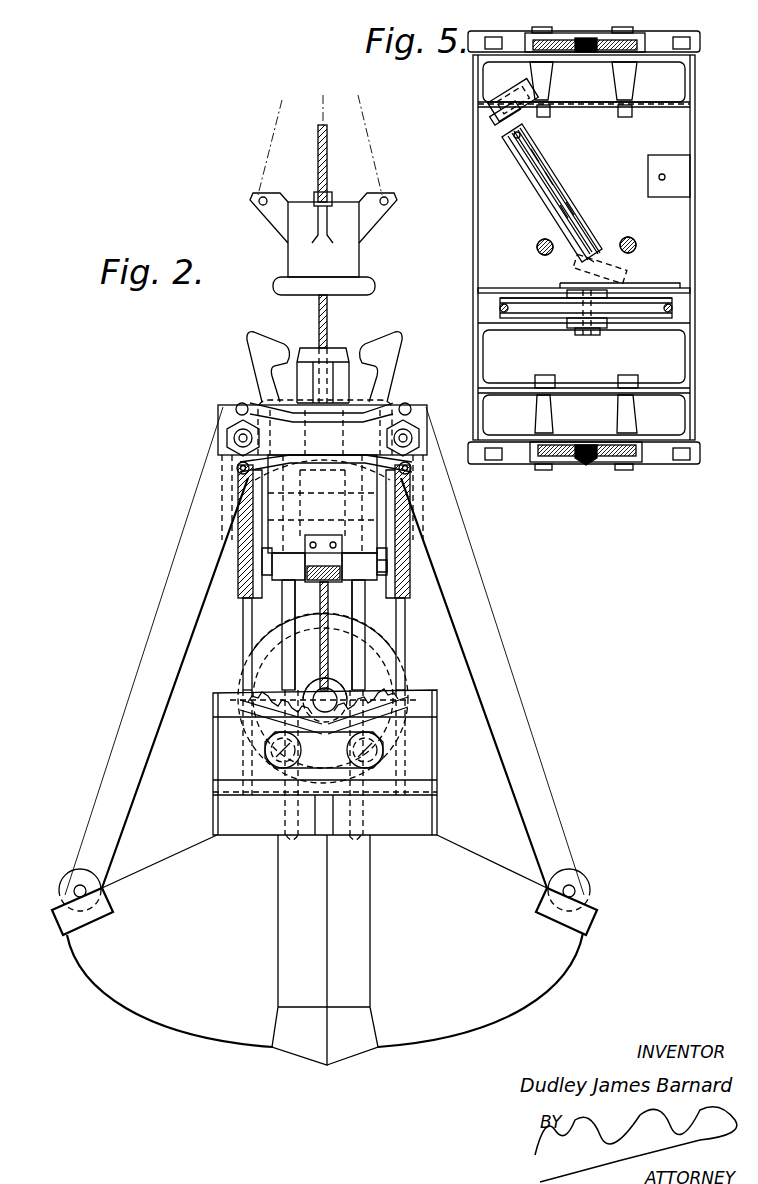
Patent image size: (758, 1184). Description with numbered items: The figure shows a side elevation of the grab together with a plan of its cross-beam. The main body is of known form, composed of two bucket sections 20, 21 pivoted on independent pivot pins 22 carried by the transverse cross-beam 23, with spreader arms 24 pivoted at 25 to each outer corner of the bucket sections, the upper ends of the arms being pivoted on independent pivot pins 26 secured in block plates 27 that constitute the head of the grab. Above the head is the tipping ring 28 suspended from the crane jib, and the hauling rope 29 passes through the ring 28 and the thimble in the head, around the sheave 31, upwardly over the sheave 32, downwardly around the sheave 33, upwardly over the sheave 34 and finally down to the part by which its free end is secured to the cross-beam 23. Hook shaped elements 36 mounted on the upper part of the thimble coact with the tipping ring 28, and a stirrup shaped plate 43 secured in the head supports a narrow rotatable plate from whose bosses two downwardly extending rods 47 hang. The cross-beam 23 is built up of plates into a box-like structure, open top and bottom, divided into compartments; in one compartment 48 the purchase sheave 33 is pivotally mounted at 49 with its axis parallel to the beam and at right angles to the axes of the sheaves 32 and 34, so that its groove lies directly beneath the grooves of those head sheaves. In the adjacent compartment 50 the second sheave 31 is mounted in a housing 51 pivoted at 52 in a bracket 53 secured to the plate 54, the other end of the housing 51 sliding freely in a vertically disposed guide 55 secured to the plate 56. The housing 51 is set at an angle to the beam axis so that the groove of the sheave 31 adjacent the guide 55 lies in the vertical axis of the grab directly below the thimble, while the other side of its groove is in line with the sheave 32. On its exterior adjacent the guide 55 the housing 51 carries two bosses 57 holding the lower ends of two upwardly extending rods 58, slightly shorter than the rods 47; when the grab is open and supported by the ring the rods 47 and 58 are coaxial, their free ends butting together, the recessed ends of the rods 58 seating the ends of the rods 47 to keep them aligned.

In FIG. 2, the bucket section 20 is at (181, 995).
In FIG. 2, the bucket section 21 is at (489, 990).
In FIG. 2, the pivot pins 22 is at (280, 762).
In FIG. 5, the pivot pins 22 is at (627, 27).
In FIG. 2, the cross-beam 23 is at (436, 708).
In FIG. 5, the cross-beam 23 is at (476, 210).
In FIG. 2, the spreader arms 24 is at (137, 702).
In FIG. 2, the pivot 25 is at (76, 888).
In FIG. 2, the pivot pins 26 is at (236, 437).
In FIG. 2, the block plates 27 is at (222, 412).
In FIG. 2, the tipping ring 28 is at (308, 257).
In FIG. 2, the hauling rope 29 is at (320, 318).
In FIG. 5, the hauling rope 29 is at (597, 238).
In FIG. 2, the sheave 31 is at (260, 634).
In FIG. 5, the sheave 31 is at (530, 150).
In FIG. 2, the sheave 32 is at (237, 580).
In FIG. 2, the purchase sheave 33 is at (392, 663).
In FIG. 5, the purchase sheave 33 is at (532, 308).
In FIG. 2, the sheave 34 is at (413, 565).
In FIG. 2, the hook shaped elements 36 is at (255, 345).
In FIG. 2, the stirrup shaped plate 43 is at (340, 583).
In FIG. 2, the rods 47 is at (260, 613).
In FIG. 5, the compartment 48 is at (495, 301).
In FIG. 2, the pivot 49 is at (332, 698).
In FIG. 5, the pivot 49 is at (597, 330).
In FIG. 5, the compartment 50 is at (502, 176).
In FIG. 5, the housing 51 is at (548, 157).
In FIG. 5, the pivot 52 is at (492, 117).
In FIG. 5, the bracket 53 is at (500, 92).
In FIG. 5, the plate 54 is at (587, 103).
In FIG. 5, the guide 55 is at (633, 273).
In FIG. 5, the plate 56 is at (523, 288).
In FIG. 5, the bosses 57 is at (616, 236).
In FIG. 2, the rods 58 is at (367, 582).
In FIG. 5, the rods 58 is at (637, 245).